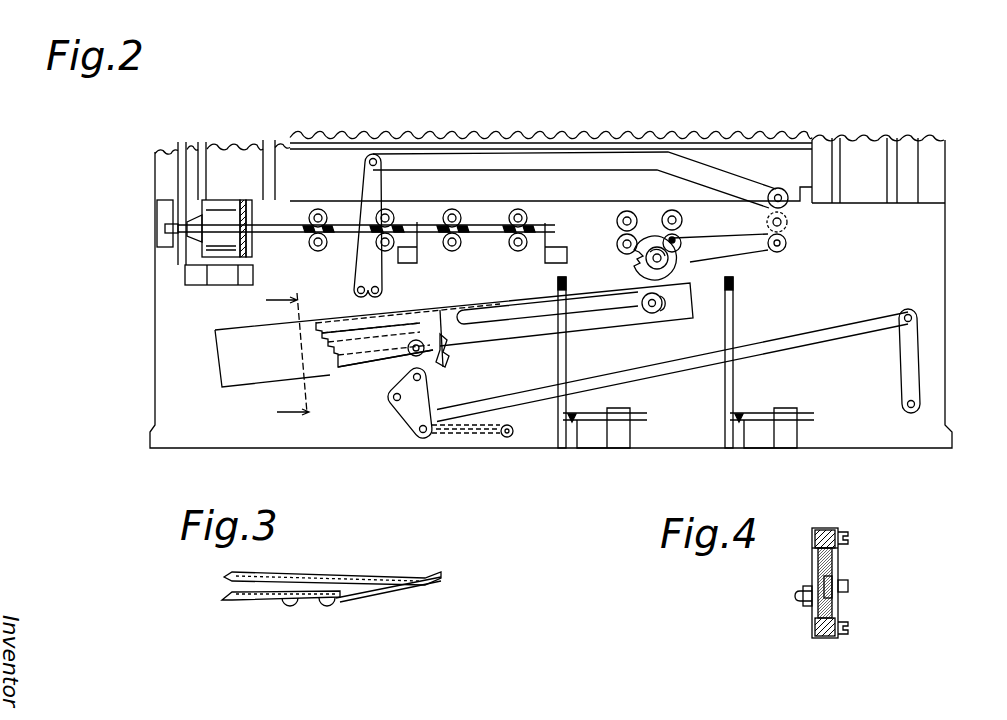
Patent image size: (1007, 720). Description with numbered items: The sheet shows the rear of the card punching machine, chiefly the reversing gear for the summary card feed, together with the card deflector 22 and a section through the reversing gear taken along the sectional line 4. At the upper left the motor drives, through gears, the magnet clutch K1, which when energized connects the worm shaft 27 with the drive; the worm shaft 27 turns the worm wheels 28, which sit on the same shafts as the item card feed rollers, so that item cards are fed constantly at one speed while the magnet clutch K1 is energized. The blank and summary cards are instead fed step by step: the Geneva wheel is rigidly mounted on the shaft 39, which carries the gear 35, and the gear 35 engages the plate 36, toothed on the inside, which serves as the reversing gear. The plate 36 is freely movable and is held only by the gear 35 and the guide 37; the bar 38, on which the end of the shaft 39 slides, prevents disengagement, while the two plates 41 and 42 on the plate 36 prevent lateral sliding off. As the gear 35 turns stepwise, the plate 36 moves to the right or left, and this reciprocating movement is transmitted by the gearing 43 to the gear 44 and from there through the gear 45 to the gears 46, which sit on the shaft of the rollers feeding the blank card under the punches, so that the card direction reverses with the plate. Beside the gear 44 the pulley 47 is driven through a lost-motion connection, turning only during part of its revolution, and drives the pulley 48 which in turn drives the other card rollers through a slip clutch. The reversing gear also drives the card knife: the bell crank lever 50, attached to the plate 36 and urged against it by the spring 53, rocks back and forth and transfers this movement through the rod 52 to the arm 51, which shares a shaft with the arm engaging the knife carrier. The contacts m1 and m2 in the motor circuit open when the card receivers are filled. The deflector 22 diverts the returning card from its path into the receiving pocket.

In FIG. 2, the magnet clutch K1 is at (222, 215).
In FIG. 2, the worm wheels 28 is at (315, 209).
In FIG. 2, the worm shaft 27 is at (329, 209).
In FIG. 2, the gears 46 is at (624, 211).
In FIG. 2, the gearing 43 is at (674, 210).
In FIG. 2, the gear 44 is at (657, 235).
In FIG. 2, the gear 45 is at (622, 250).
In FIG. 2, the pulley 47 is at (633, 263).
In FIG. 2, the pulley 48 is at (787, 247).
In FIG. 2, the sectional line 4 is at (297, 353).
In FIG. 2, the guide 37 is at (652, 314).
In FIG. 2, the arm 51 is at (919, 372).
In FIG. 2, the rod 52 is at (833, 342).
In FIG. 2, the bar 38 is at (343, 352).
In FIG. 4, the bar 38 is at (848, 584).
In FIG. 2, the plate 36 is at (366, 368).
In FIG. 4, the plate 36 is at (827, 640).
In FIG. 2, the bell crank lever 50 is at (411, 420).
In FIG. 2, the shaft 39 is at (419, 357).
In FIG. 4, the shaft 39 is at (795, 599).
In FIG. 2, the gear 35 is at (446, 358).
In FIG. 4, the gear 35 is at (824, 584).
In FIG. 2, the spring 53 is at (511, 437).
In FIG. 2, the contact m1 is at (578, 422).
In FIG. 2, the contact m2 is at (746, 424).
In FIG. 3, the deflector 22 is at (378, 596).
In FIG. 4, the plate 41 is at (811, 548).
In FIG. 4, the plate 42 is at (838, 556).